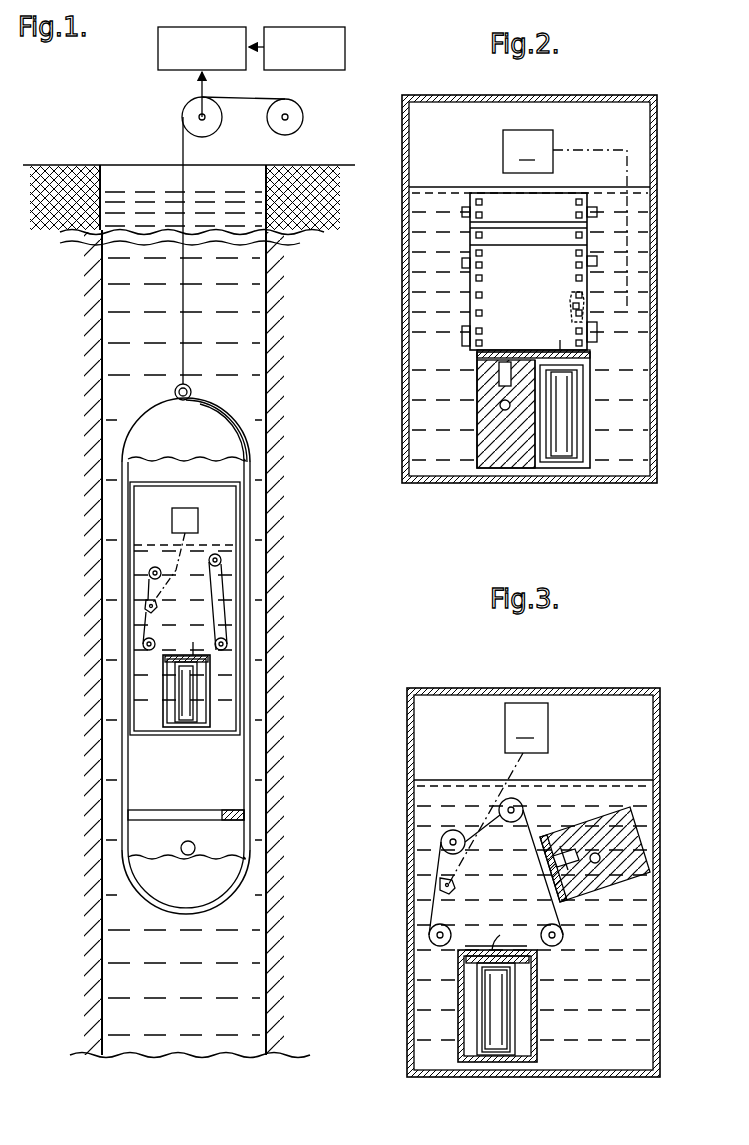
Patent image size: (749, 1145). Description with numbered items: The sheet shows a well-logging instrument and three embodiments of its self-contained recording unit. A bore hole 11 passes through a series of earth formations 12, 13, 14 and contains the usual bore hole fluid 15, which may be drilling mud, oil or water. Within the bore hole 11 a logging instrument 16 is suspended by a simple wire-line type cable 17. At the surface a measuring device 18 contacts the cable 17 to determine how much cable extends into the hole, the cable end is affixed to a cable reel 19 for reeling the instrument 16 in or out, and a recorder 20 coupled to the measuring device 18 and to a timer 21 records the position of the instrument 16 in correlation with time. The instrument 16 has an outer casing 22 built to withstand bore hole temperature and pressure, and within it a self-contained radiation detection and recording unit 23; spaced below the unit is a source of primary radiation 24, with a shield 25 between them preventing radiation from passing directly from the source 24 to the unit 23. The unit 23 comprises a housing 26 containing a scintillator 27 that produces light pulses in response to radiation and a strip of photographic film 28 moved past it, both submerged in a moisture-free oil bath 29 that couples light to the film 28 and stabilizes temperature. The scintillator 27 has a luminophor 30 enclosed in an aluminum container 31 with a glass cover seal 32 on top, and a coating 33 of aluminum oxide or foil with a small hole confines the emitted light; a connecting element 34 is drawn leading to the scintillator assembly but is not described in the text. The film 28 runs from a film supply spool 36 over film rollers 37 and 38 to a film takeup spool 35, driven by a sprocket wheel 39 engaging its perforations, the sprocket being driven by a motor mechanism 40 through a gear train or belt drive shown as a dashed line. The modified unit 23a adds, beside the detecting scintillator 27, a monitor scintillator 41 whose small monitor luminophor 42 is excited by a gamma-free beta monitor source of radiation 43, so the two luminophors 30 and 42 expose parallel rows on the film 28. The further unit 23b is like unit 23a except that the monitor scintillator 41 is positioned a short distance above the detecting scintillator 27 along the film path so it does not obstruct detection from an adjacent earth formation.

In FIG. 1, the bore hole 11 is at (95, 184).
In FIG. 1, the earth formation 12 is at (305, 208).
In FIG. 1, the earth formation 13 is at (306, 340).
In FIG. 1, the earth formation 14 is at (64, 467).
In FIG. 1, the bore hole fluid 15 is at (125, 284).
In FIG. 1, the logging instrument 16 is at (242, 402).
In FIG. 1, the cable 17 is at (183, 143).
In FIG. 1, the measuring device 18 is at (213, 130).
In FIG. 1, the cable reel 19 is at (303, 110).
In FIG. 1, the recorder 20 is at (158, 48).
In FIG. 1, the timer 21 is at (346, 44).
In FIG. 1, the outer casing 22 is at (200, 437).
In FIG. 1, the self-contained radiation detection and recording unit 23 is at (241, 496).
In FIG. 2, the self-contained radiation detection and recording unit 23a is at (661, 188).
In FIG. 3, the self-contained radiation detection and recording unit 23b is at (661, 713).
In FIG. 1, the source of primary radiation 24 is at (195, 846).
In FIG. 1, the shield 25 is at (186, 812).
In FIG. 1, the housing 26 is at (242, 524).
In FIG. 2, the housing 26 is at (656, 153).
In FIG. 3, the housing 26 is at (660, 960).
In FIG. 1, the scintillator 27 is at (165, 725).
In FIG. 2, the scintillator 27 is at (592, 432).
In FIG. 3, the scintillator 27 is at (538, 1003).
In FIG. 1, the photographic film 28 is at (220, 592).
In FIG. 2, the photographic film 28 is at (472, 320).
In FIG. 1, the oil bath 29 is at (222, 623).
In FIG. 2, the oil bath 29 is at (425, 297).
In FIG. 3, the oil bath 29 is at (636, 913).
In FIG. 1, the luminophor 30 is at (177, 667).
In FIG. 2, the luminophor 30 is at (560, 470).
In FIG. 3, the luminophor 30 is at (496, 1050).
In FIG. 1, the aluminum container 31 is at (160, 687).
In FIG. 1, the glass cover seal 32 is at (210, 672).
In FIG. 2, the glass cover seal 32 is at (585, 380).
In FIG. 3, the glass cover seal 32 is at (528, 965).
In FIG. 1, the coating 33 is at (210, 710).
In FIG. 2, the coating 33 is at (478, 355).
In FIG. 3, the coating 33 is at (465, 951).
In FIG. 1, the connecting link 34 is at (193, 655).
In FIG. 2, the connecting link 34 is at (560, 348).
In FIG. 3, the connecting link 34 is at (495, 952).
In FIG. 1, the film takeup spool 35 is at (149, 569).
In FIG. 2, the film takeup spool 35 is at (462, 262).
In FIG. 3, the film takeup spool 35 is at (443, 835).
In FIG. 1, the film supply spool 36 is at (222, 561).
In FIG. 2, the film supply spool 36 is at (466, 200).
In FIG. 3, the film supply spool 36 is at (518, 800).
In FIG. 1, the film roller 37 is at (143, 640).
In FIG. 2, the film roller 37 is at (598, 342).
In FIG. 3, the film roller 37 is at (433, 926).
In FIG. 1, the film roller 38 is at (228, 648).
In FIG. 3, the film roller 38 is at (563, 936).
In FIG. 1, the sprocket wheel 39 is at (143, 603).
In FIG. 2, the sprocket wheel 39 is at (595, 319).
In FIG. 3, the sprocket wheel 39 is at (440, 881).
In FIG. 1, the motor mechanism 40 is at (195, 506).
In FIG. 2, the motor mechanism 40 is at (565, 220).
In FIG. 3, the motor mechanism 40 is at (497, 795).
In FIG. 2, the monitor scintillator 41 is at (520, 470).
In FIG. 3, the monitor scintillator 41 is at (650, 868).
In FIG. 2, the monitor luminophor 42 is at (500, 382).
In FIG. 3, the monitor luminophor 42 is at (552, 858).
In FIG. 2, the monitor source of radiation 43 is at (503, 410).
In FIG. 3, the monitor source of radiation 43 is at (592, 868).